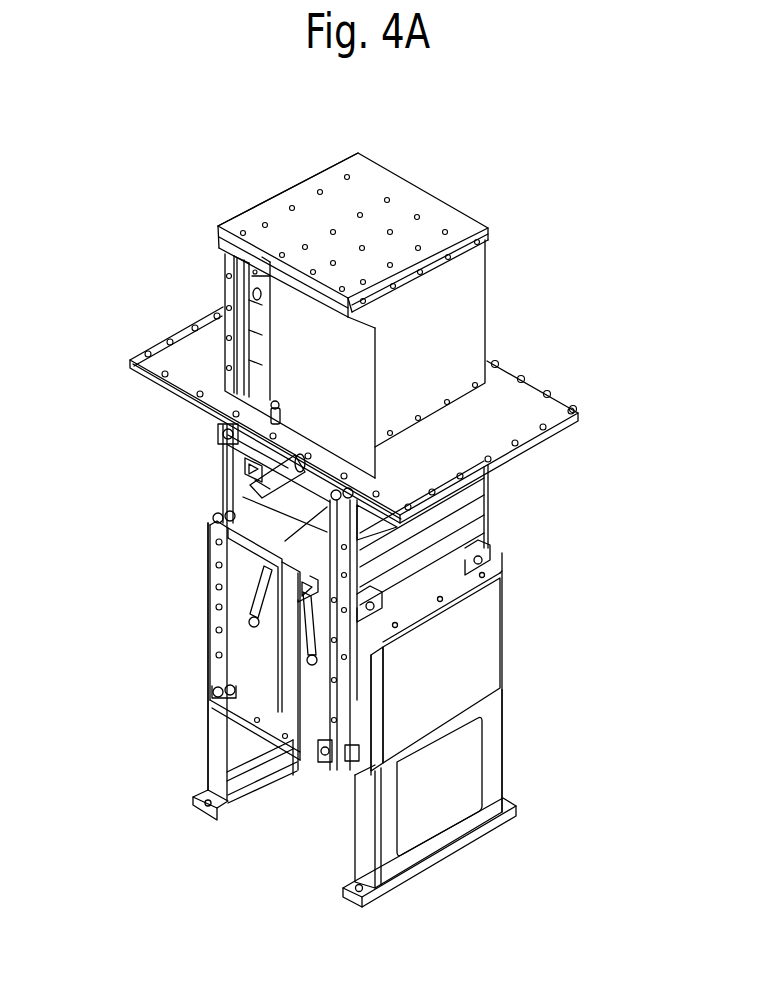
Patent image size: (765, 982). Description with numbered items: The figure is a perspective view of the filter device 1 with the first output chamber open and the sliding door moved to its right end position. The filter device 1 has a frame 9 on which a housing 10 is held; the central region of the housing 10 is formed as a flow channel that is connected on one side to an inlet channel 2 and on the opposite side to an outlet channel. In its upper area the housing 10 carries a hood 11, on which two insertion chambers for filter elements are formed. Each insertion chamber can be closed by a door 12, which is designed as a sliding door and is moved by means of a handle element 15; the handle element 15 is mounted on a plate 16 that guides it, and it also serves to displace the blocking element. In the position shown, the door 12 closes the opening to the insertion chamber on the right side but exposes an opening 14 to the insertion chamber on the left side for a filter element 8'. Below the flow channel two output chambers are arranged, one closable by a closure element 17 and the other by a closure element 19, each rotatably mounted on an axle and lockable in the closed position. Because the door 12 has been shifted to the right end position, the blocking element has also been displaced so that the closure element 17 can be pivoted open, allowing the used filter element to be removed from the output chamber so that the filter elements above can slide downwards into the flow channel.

The filter device 1 is at (526, 175).
The inlet channel 2 is at (487, 523).
The filter element 8' is at (144, 368).
The frame 9 is at (490, 768).
The housing 10 is at (415, 580).
The hood 11 is at (468, 298).
The door 12 is at (315, 380).
The opening 14 is at (245, 333).
The handle element 15 is at (240, 484).
The plate 16 is at (522, 410).
The closure element 17 is at (315, 723).
The closure element 19 is at (255, 663).